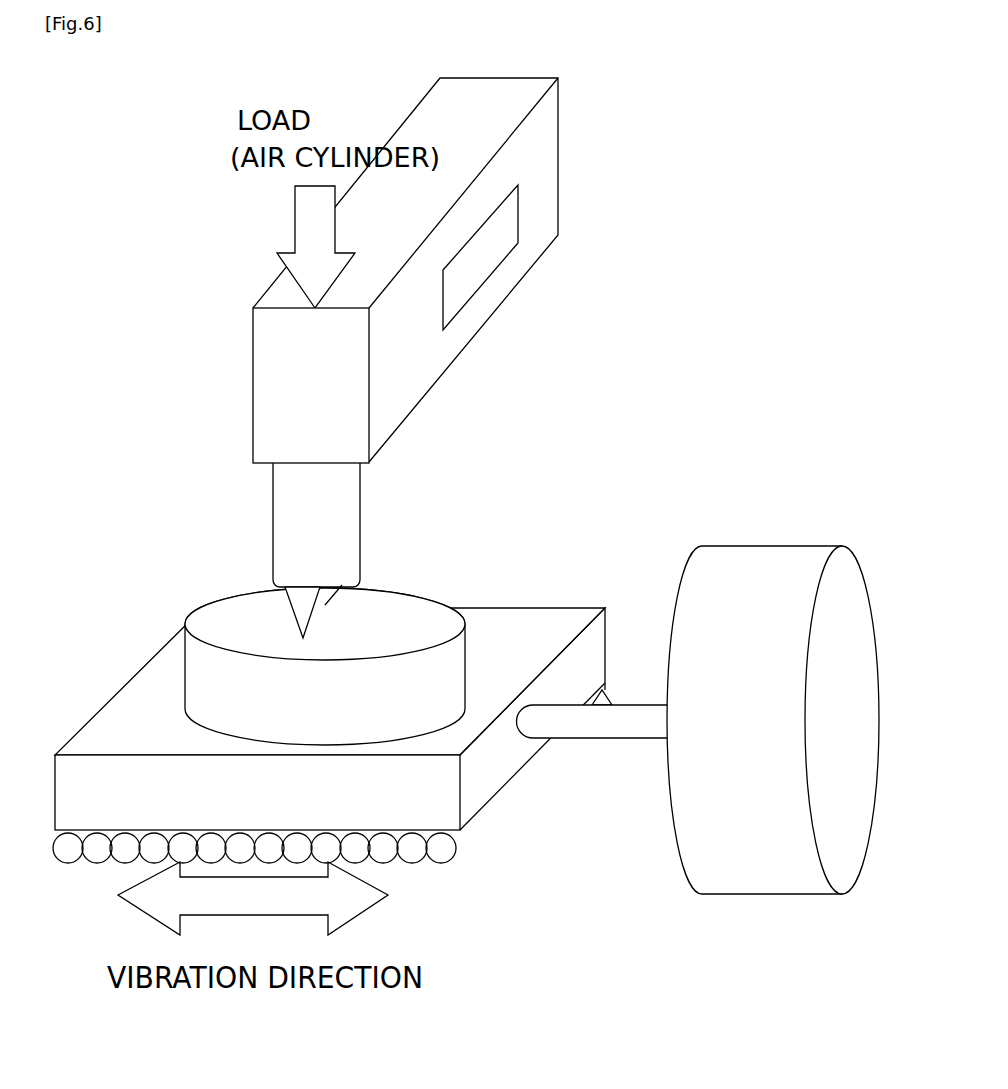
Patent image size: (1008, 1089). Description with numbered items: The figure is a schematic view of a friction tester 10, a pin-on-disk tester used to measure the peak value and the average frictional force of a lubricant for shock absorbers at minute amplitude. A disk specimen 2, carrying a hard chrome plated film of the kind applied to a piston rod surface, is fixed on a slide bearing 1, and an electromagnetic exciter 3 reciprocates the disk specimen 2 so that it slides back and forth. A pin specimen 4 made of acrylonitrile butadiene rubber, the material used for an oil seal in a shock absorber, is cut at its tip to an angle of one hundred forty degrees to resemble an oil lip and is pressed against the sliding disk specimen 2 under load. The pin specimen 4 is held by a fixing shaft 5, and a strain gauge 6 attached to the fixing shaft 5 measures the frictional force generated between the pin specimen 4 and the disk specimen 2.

The slide bearing 1 is at (110, 713).
The disk specimen 2 is at (213, 600).
The electromagnetic exciter 3 is at (755, 572).
The pin specimen 4 is at (442, 562).
The fixing shaft 5 is at (275, 378).
The strain gauge 6 is at (468, 272).
The friction tester 10 is at (772, 243).